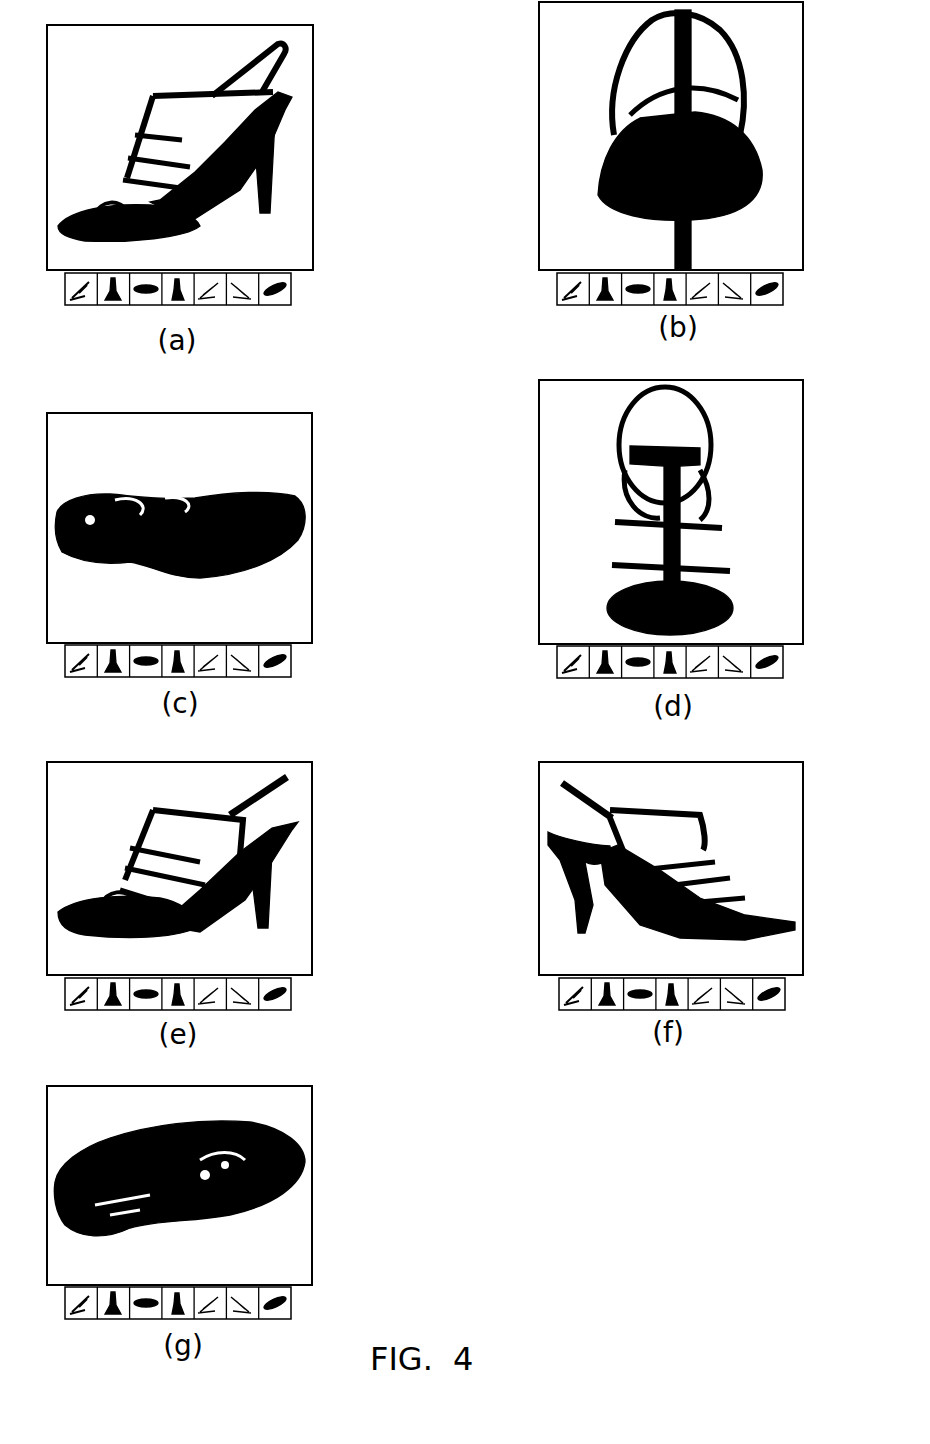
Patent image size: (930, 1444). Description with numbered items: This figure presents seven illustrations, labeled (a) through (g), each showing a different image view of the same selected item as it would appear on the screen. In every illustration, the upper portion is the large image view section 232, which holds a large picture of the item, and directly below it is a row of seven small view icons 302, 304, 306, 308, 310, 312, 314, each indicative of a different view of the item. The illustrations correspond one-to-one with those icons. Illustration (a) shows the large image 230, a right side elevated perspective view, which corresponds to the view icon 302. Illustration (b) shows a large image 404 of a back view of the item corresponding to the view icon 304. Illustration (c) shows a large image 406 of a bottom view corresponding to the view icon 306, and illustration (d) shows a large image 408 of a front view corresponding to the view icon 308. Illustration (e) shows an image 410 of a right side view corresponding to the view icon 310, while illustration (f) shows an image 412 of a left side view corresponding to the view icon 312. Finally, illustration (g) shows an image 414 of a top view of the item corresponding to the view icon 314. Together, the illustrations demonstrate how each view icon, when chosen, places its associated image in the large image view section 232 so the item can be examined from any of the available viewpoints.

The large image 230 is at (140, 133).
The large image view section 232 is at (316, 224).
The view icon 302 is at (87, 303).
The view icon 304 is at (613, 302).
The view icon 306 is at (150, 677).
The view icon 308 is at (660, 668).
The view icon 310 is at (219, 1000).
The view icon 312 is at (745, 1013).
The view icon 314 is at (275, 1316).
The large image 404 is at (614, 72).
The large image 406 is at (112, 508).
The large image 408 is at (630, 470).
The image 410 is at (137, 850).
The image 412 is at (707, 858).
The image 414 is at (288, 1186).